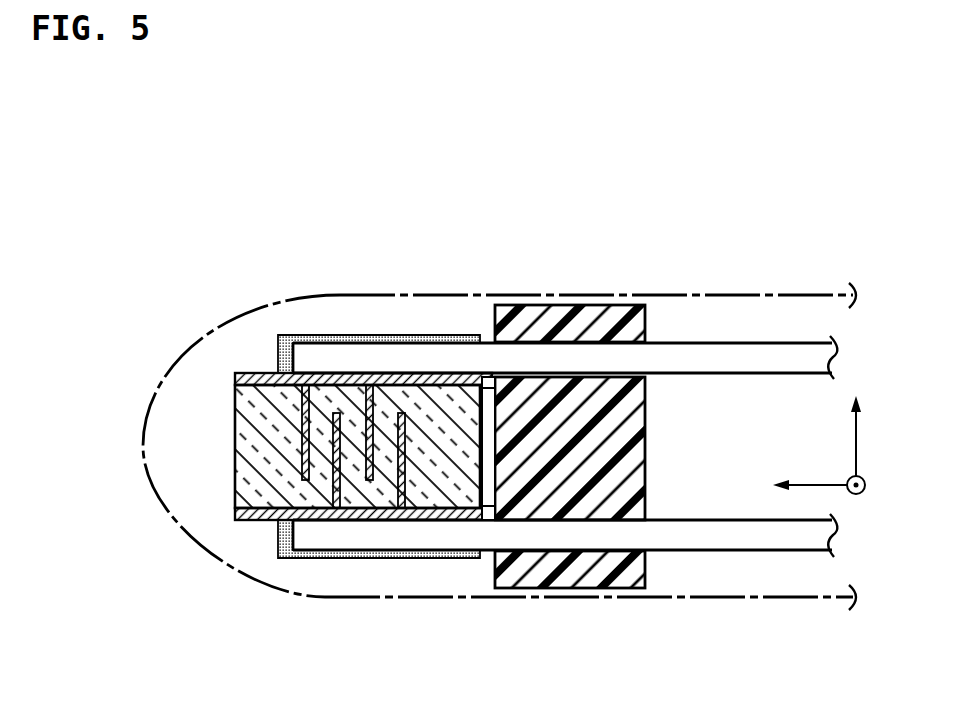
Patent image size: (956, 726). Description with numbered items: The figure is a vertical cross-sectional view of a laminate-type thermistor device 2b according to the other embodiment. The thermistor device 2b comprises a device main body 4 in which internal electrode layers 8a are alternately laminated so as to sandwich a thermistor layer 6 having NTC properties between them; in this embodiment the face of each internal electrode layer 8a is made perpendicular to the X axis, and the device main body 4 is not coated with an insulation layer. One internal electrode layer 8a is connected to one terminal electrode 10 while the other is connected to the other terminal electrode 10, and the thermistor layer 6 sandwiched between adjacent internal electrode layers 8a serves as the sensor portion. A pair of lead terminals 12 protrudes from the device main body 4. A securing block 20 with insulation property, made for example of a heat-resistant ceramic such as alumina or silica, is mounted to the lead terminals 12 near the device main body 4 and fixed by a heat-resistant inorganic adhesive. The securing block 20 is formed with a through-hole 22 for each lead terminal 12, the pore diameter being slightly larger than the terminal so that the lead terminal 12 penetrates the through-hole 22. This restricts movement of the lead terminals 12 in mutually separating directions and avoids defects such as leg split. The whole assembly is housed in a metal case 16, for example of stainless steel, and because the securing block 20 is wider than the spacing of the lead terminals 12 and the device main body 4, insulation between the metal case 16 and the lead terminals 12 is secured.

The thermistor device 2b is at (226, 295).
The device main body 4 is at (252, 470).
The thermistor layer 6 is at (363, 430).
The internal electrode layers 8a is at (300, 448).
The terminal electrodes 10 is at (410, 383).
The lead terminals 12 is at (783, 352).
The metal case 16 is at (716, 295).
The securing block 20 is at (543, 574).
The through-hole 22 is at (589, 340).